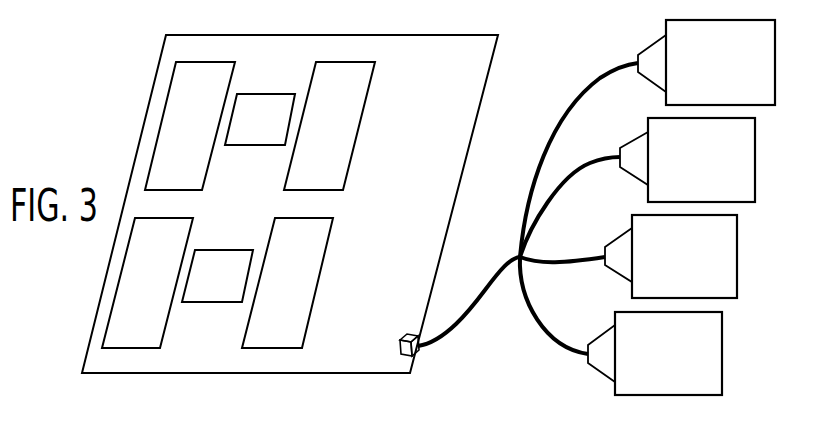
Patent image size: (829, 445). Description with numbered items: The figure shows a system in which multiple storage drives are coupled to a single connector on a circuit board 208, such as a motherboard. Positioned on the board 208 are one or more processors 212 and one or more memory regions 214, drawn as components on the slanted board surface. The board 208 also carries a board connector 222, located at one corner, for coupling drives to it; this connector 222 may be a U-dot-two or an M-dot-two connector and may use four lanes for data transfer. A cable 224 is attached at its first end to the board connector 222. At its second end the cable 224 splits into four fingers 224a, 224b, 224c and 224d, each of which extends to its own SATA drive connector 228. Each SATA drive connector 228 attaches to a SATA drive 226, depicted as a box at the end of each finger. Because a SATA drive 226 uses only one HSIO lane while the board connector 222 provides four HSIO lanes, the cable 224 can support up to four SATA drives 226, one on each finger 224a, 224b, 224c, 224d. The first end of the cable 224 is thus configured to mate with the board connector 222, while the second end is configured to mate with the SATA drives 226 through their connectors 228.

The circuit board 208 is at (477, 76).
The processor 212 is at (280, 132).
The memory region 214 is at (208, 138).
The board connector 222 is at (412, 363).
The cable 224 is at (463, 318).
The finger 224a is at (543, 338).
The finger 224b is at (578, 268).
The finger 224c is at (578, 180).
The finger 224d is at (592, 85).
The SATA drive 226 is at (738, 79).
The SATA drive connector 228 is at (602, 366).